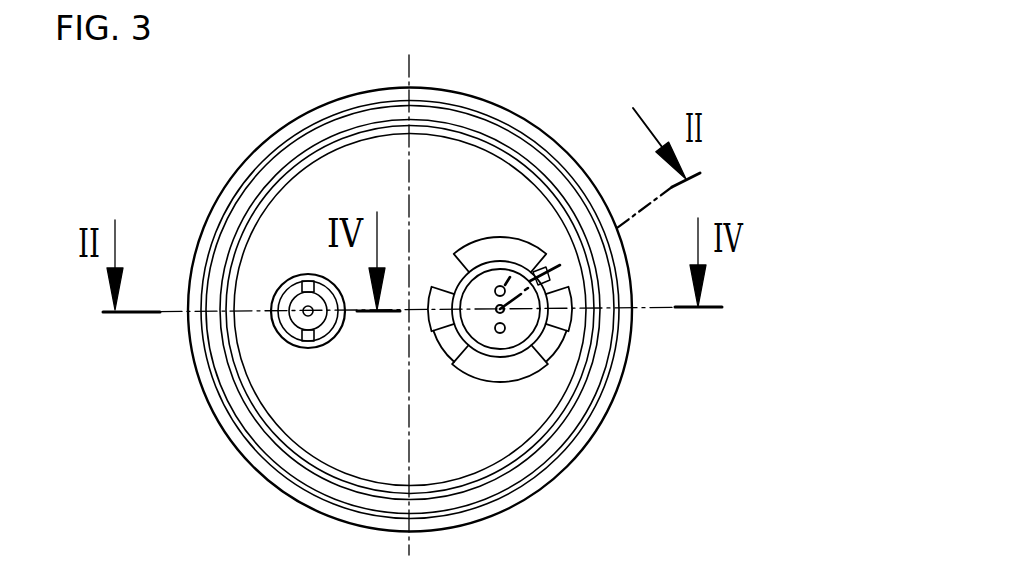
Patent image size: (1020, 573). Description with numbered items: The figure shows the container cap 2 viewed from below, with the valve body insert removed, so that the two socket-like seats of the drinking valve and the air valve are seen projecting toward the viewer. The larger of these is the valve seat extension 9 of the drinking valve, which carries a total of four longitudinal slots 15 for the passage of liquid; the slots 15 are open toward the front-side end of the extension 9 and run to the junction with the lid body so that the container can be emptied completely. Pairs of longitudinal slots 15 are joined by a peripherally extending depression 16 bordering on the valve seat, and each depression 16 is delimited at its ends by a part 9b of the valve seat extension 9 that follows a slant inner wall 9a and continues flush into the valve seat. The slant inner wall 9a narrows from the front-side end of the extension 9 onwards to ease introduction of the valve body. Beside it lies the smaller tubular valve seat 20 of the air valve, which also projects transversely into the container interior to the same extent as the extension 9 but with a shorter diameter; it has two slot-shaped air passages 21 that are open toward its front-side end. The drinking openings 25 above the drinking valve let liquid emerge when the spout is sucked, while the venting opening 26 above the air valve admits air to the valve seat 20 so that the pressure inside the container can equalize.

The container cap 2 is at (210, 448).
The valve seat extension 9 is at (516, 240).
The slant inner wall 9a is at (510, 277).
The part of the valve seat extension 9b is at (499, 268).
The longitudinal slots 15 is at (453, 292).
The peripherally extending depression 16 is at (452, 285).
The valve seat 20 is at (234, 327).
The slot-shaped air passages 21 is at (291, 309).
The drinking openings 25 is at (530, 270).
The venting opening 26 is at (286, 426).